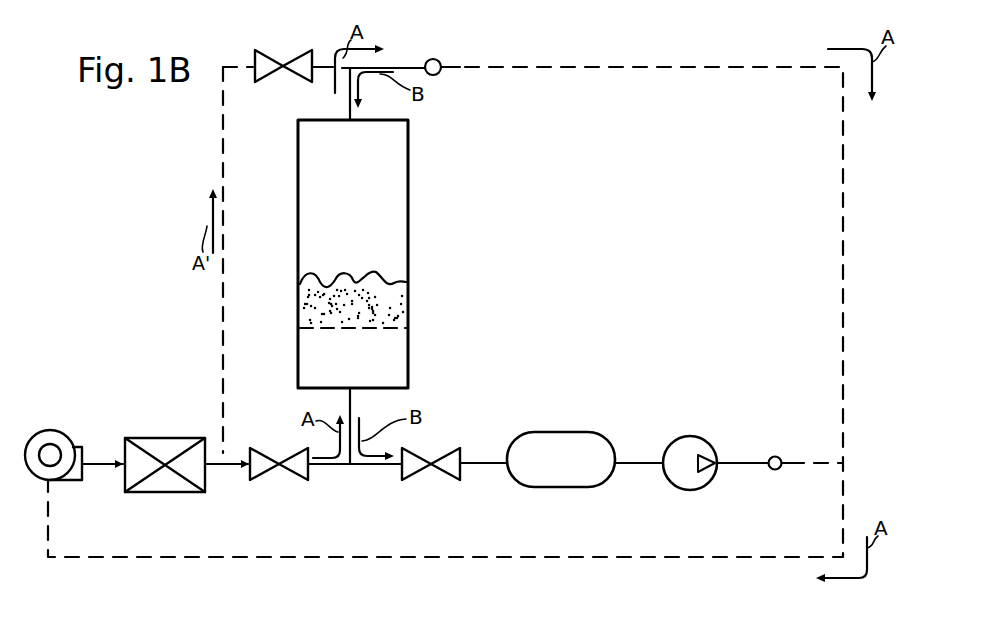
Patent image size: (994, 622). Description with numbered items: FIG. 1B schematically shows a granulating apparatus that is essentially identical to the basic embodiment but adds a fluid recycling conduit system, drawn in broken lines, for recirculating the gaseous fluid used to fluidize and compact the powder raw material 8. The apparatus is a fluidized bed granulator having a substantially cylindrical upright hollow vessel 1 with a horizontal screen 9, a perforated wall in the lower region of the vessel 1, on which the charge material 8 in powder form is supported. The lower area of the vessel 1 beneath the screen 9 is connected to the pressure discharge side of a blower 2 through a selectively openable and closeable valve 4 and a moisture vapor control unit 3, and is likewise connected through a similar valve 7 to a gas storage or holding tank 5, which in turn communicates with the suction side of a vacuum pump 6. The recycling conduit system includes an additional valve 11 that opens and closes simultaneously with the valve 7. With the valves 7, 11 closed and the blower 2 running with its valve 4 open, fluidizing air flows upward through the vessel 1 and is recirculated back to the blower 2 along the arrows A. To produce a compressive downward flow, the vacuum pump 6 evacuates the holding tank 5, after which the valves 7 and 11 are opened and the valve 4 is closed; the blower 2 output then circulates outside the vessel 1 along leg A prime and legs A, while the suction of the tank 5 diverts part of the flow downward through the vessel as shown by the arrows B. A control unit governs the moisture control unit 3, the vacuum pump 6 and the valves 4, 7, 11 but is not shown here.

The vessel 1 is at (408, 190).
The blower 2 is at (37, 432).
The moisture vapor control unit 3 is at (160, 438).
The valve 4 is at (270, 480).
The gas storage or holding tank 5 is at (537, 487).
The vacuum pump 6 is at (672, 485).
The valve 7 is at (425, 480).
The charge material 8 is at (390, 310).
The screen 9 is at (382, 330).
The valve 11 is at (268, 52).